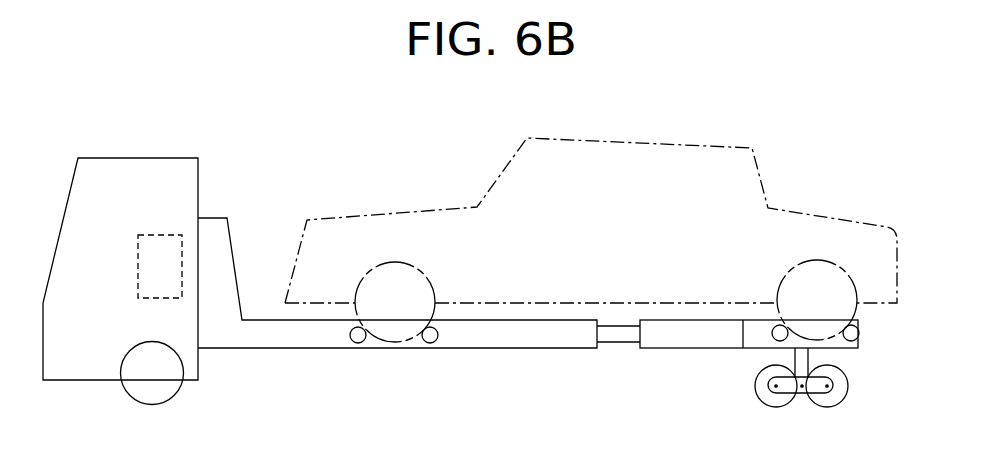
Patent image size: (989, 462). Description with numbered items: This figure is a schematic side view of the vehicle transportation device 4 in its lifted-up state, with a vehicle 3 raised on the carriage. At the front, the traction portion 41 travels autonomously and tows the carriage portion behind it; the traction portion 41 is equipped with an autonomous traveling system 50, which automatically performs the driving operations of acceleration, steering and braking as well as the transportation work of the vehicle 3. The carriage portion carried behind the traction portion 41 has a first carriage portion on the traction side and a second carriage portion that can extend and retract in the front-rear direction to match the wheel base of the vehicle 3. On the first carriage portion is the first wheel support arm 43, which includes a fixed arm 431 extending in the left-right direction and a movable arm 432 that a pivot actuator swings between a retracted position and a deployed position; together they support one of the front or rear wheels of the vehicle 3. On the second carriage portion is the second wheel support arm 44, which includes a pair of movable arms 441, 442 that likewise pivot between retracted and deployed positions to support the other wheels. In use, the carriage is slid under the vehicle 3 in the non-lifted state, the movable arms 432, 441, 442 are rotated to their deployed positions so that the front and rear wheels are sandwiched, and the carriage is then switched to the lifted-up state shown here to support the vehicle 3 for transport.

The vehicle 3 is at (764, 174).
The vehicle transportation device 4 is at (286, 161).
The traction portion 41 is at (123, 180).
The first wheel support arm 43 is at (395, 388).
The fixed arm 431 is at (358, 343).
The movable arm 432 is at (421, 364).
The second wheel support arm 44 is at (857, 238).
The movable arm 441 is at (780, 325).
The movable arm 442 is at (853, 325).
The autonomous traveling system 50 is at (138, 276).